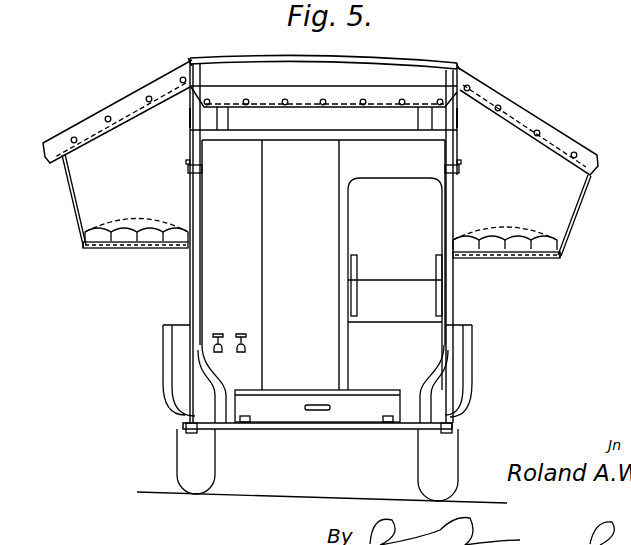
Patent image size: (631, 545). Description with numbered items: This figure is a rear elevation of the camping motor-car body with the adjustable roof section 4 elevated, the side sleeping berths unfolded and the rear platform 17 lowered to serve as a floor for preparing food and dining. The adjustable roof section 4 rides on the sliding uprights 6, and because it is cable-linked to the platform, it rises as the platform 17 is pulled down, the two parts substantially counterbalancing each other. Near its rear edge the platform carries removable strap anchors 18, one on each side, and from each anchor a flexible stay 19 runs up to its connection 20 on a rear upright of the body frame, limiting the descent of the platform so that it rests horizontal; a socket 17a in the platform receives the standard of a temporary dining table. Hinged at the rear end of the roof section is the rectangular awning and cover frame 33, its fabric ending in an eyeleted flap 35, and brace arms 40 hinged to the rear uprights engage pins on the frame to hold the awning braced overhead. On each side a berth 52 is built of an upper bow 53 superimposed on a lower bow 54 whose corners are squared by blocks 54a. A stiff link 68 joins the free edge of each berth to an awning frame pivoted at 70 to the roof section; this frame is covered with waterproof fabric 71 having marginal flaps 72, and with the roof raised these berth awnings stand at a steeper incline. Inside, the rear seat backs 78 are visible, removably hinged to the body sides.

The adjustable roof section 4 is at (246, 55).
The uprights 6 is at (230, 121).
The platform 17 is at (305, 432).
The socket 17a is at (263, 433).
The strap anchors 18 is at (186, 434).
The flexible stay 19 is at (193, 288).
The stay connection point 20 is at (188, 178).
The awning and cover frame 33 is at (323, 76).
The flap 35 is at (344, 100).
The brace arms 40 is at (190, 116).
The berth 52 is at (115, 237).
The inner or upper bow 53 is at (132, 240).
The lower or outer bow 54 is at (125, 250).
The corner block 54a is at (590, 242).
The link 68 is at (68, 193).
The awning frame pivot 70 is at (190, 59).
The waterproof fabric 71 is at (106, 106).
The marginal flaps 72 is at (95, 128).
The rear seat backs 78 is at (149, 226).